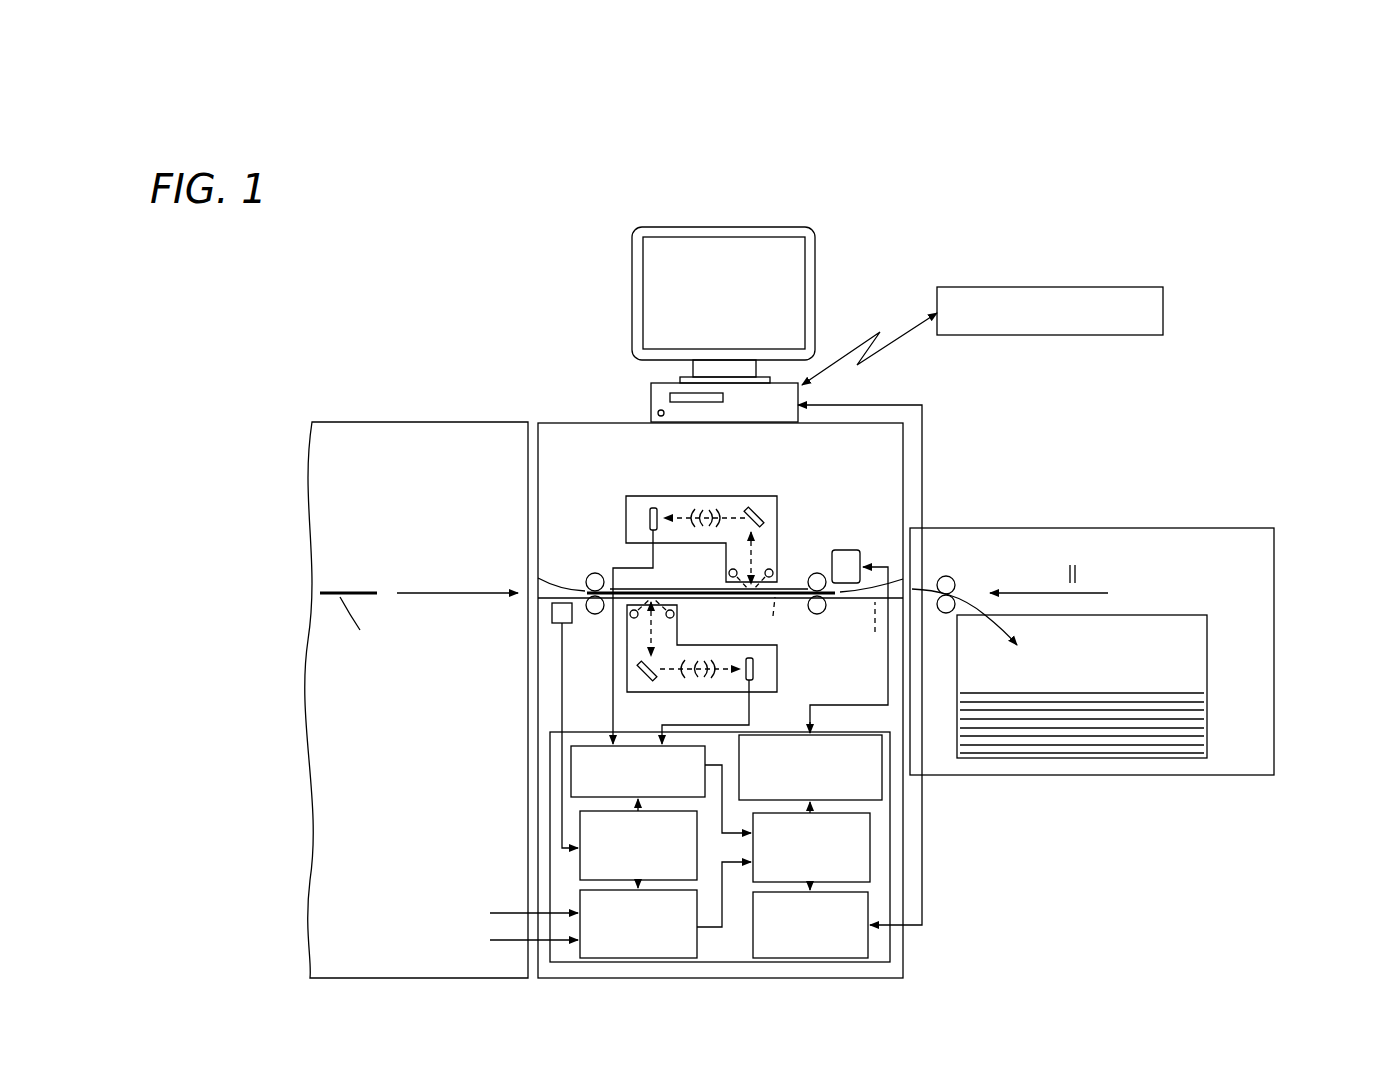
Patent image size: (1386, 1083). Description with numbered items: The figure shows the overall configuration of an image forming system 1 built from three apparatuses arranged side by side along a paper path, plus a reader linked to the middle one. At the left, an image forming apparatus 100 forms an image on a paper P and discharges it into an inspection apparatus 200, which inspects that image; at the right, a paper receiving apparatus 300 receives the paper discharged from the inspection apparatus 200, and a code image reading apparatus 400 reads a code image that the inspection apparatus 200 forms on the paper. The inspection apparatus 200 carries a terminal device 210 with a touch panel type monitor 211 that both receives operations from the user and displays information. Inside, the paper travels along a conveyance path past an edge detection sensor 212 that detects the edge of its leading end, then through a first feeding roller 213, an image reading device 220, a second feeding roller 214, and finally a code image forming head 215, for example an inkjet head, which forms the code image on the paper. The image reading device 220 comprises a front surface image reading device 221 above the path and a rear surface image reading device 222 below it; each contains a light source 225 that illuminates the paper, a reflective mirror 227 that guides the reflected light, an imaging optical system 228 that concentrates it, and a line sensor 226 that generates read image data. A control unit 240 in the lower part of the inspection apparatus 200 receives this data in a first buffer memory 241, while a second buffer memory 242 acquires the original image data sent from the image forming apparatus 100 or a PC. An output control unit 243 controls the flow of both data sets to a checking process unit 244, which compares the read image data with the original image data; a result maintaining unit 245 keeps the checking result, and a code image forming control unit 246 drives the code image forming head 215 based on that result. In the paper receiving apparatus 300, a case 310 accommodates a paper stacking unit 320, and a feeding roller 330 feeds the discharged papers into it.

The image forming system 1 is at (385, 223).
The image forming apparatus 100 is at (417, 415).
The inspection apparatus 200 is at (895, 268).
The terminal device 210 is at (612, 225).
The touch panel type monitor 211 is at (632, 283).
The edge detection sensor 212 is at (548, 610).
The first feeding roller 213 is at (595, 572).
The second feeding roller 214 is at (822, 572).
The code image forming head 215 is at (860, 553).
The image reading device 220 is at (653, 468).
The front surface image reading device 221 is at (773, 493).
The rear surface image reading device 222 is at (787, 662).
The light source 225 is at (737, 568).
The line sensor 226 is at (653, 508).
The reflective mirror 227 is at (752, 505).
The imaging optical system 228 is at (698, 497).
The control unit 240 is at (550, 800).
The first buffer memory 241 is at (571, 768).
The second buffer memory 242 is at (580, 900).
The output control unit 243 is at (580, 862).
The checking process unit 244 is at (870, 843).
The result maintaining unit 245 is at (868, 945).
The code image forming control unit 246 is at (882, 785).
The paper receiving apparatus 300 is at (1238, 488).
The case 310 is at (1278, 587).
The paper stacking unit 320 is at (1172, 614).
The feeding roller 330 is at (958, 567).
The code image reading apparatus 400 is at (1110, 285).